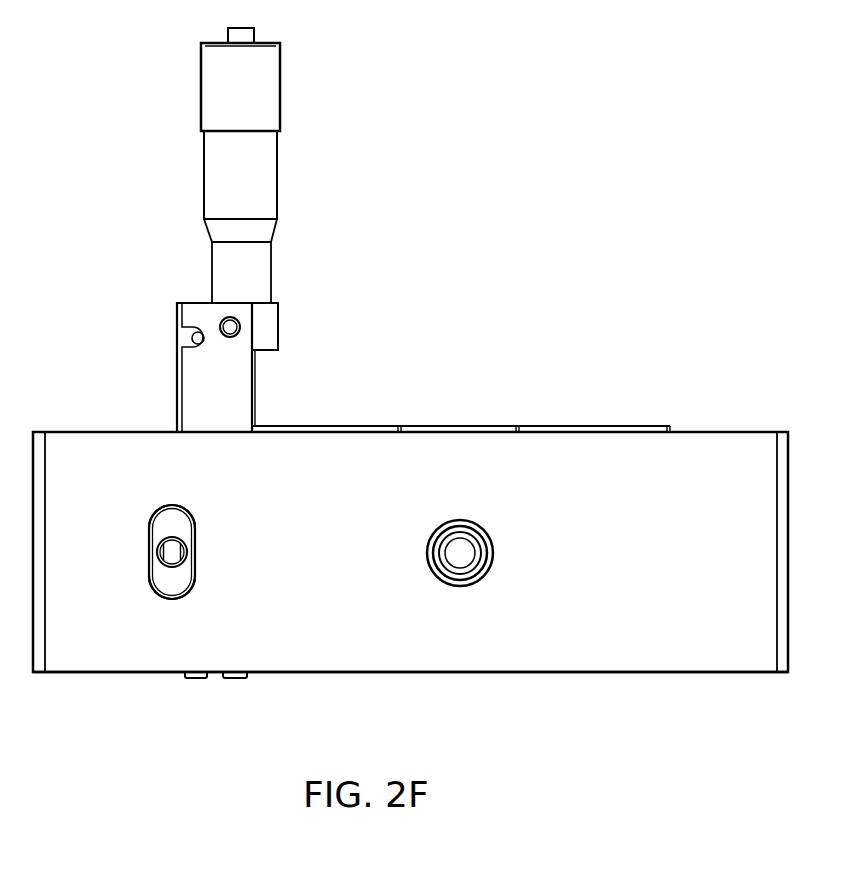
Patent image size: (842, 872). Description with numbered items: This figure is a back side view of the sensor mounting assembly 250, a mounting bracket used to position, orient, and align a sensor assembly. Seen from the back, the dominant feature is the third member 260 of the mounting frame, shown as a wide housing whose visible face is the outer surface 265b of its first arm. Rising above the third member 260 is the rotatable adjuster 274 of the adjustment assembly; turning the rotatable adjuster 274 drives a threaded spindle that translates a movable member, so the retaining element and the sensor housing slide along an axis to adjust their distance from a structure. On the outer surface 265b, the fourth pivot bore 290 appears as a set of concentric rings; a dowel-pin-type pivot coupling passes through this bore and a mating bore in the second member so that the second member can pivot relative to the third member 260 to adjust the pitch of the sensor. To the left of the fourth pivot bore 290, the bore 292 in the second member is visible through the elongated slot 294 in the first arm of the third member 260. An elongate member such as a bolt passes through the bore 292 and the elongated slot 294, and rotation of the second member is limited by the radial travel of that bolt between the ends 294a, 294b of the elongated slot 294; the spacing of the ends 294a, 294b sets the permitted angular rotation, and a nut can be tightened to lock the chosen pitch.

The sensor mounting assembly 250 is at (582, 212).
The third member 260 is at (613, 673).
The outer surface of the first arm of the third member 265b is at (482, 650).
The rotatable adjuster 274 is at (281, 87).
The fourth pivot bore 290 is at (494, 550).
The bore 292 is at (172, 570).
The elongated slot 294 is at (194, 512).
The end of the elongated slot 294a is at (172, 503).
The end of the elongated slot 294b is at (172, 600).